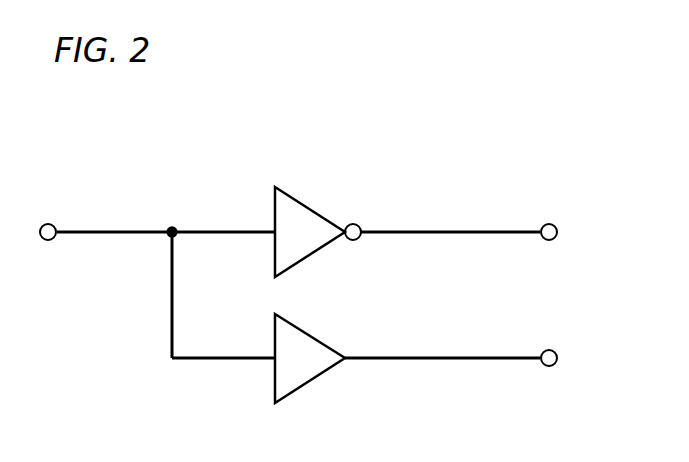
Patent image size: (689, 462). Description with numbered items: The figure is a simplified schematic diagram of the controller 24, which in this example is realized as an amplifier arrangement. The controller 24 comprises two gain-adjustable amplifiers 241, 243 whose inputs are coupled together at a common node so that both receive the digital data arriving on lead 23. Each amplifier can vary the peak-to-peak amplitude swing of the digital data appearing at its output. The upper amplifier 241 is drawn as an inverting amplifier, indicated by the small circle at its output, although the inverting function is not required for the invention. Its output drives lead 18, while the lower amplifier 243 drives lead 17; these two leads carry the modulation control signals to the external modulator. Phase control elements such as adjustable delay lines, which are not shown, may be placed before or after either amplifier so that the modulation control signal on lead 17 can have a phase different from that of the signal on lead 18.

The controller 24 is at (190, 141).
The lead 23 is at (76, 228).
The gain-adjustable amplifier 241 is at (299, 198).
The gain-adjustable amplifier 243 is at (303, 388).
The lead 18 is at (537, 225).
The lead 17 is at (538, 366).